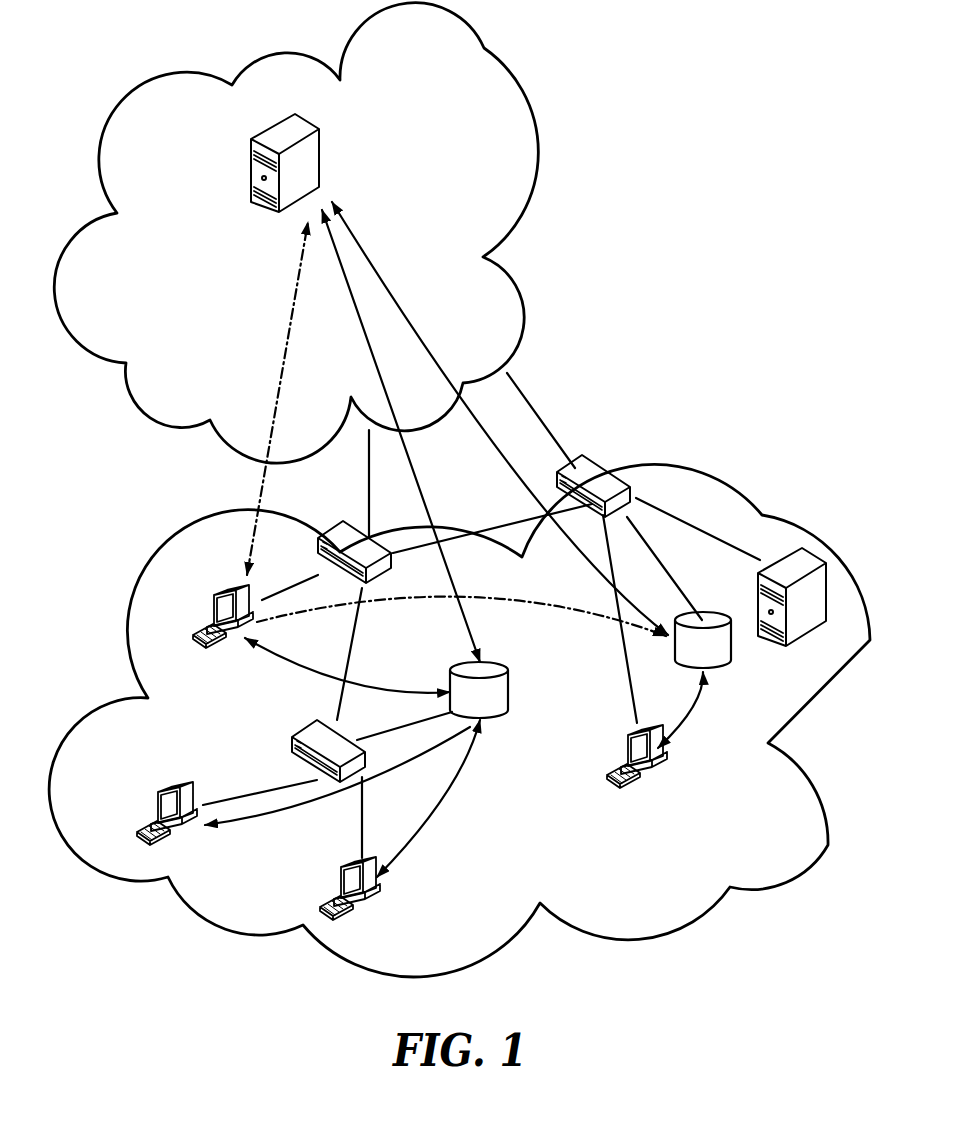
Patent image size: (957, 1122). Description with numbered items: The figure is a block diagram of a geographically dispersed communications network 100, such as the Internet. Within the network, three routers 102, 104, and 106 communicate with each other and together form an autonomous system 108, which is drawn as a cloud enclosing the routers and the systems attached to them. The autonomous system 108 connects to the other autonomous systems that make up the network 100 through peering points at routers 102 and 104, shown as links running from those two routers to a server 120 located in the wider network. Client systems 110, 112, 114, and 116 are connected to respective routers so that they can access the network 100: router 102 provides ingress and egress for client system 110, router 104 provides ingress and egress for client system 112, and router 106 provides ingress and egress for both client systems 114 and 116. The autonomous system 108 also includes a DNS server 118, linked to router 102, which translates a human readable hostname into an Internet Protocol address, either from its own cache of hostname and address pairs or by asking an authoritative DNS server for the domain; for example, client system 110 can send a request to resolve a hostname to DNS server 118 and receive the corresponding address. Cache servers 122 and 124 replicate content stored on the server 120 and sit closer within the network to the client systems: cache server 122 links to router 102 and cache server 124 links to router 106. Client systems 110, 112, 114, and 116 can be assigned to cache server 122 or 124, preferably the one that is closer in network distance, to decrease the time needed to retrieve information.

The network 100 is at (622, 187).
The router 102 is at (603, 468).
The router 104 is at (333, 522).
The router 106 is at (288, 738).
The autonomous system 108 is at (735, 485).
The client system 110 is at (625, 733).
The client system 112 is at (205, 643).
The client system 114 is at (160, 784).
The client system 116 is at (338, 860).
The DNS server 118 is at (784, 641).
The server 120 is at (268, 143).
The cache server 122 is at (731, 661).
The cache server 124 is at (510, 692).